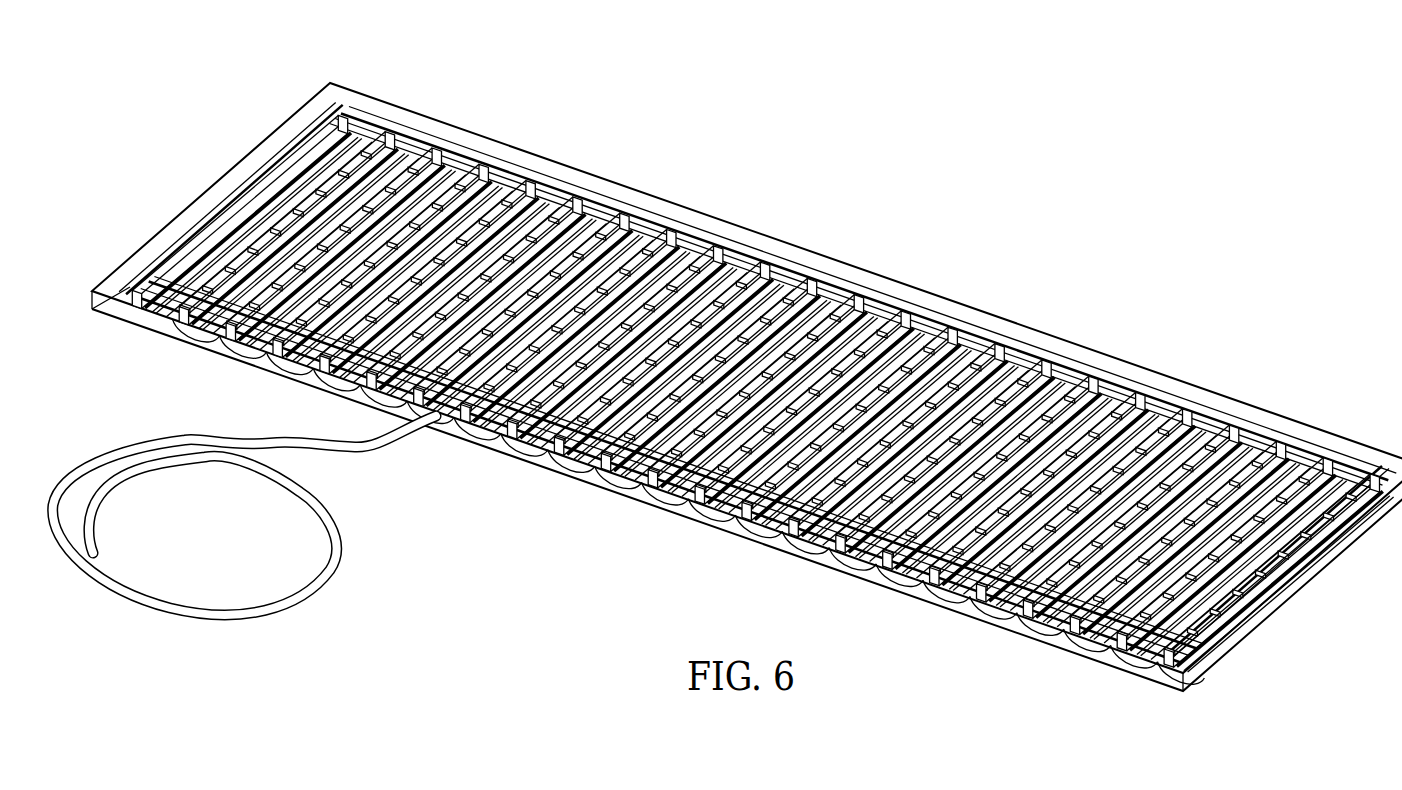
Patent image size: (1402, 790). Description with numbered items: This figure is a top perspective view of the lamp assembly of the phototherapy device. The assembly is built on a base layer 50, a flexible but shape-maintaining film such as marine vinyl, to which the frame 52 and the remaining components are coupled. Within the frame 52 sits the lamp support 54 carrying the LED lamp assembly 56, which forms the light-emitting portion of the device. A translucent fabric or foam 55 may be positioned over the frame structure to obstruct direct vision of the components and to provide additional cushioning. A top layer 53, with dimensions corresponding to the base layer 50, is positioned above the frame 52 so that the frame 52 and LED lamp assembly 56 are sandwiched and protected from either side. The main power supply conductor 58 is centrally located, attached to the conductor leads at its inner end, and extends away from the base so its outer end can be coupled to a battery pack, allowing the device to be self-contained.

The base layer 50 is at (122, 328).
The frame 52 is at (957, 342).
The top layer 53 is at (338, 95).
The lamp support 54 is at (872, 318).
The translucent fabric or foam 55 is at (146, 284).
The LED lamp assembly 56 is at (758, 262).
The main power supply conductor 58 is at (126, 607).